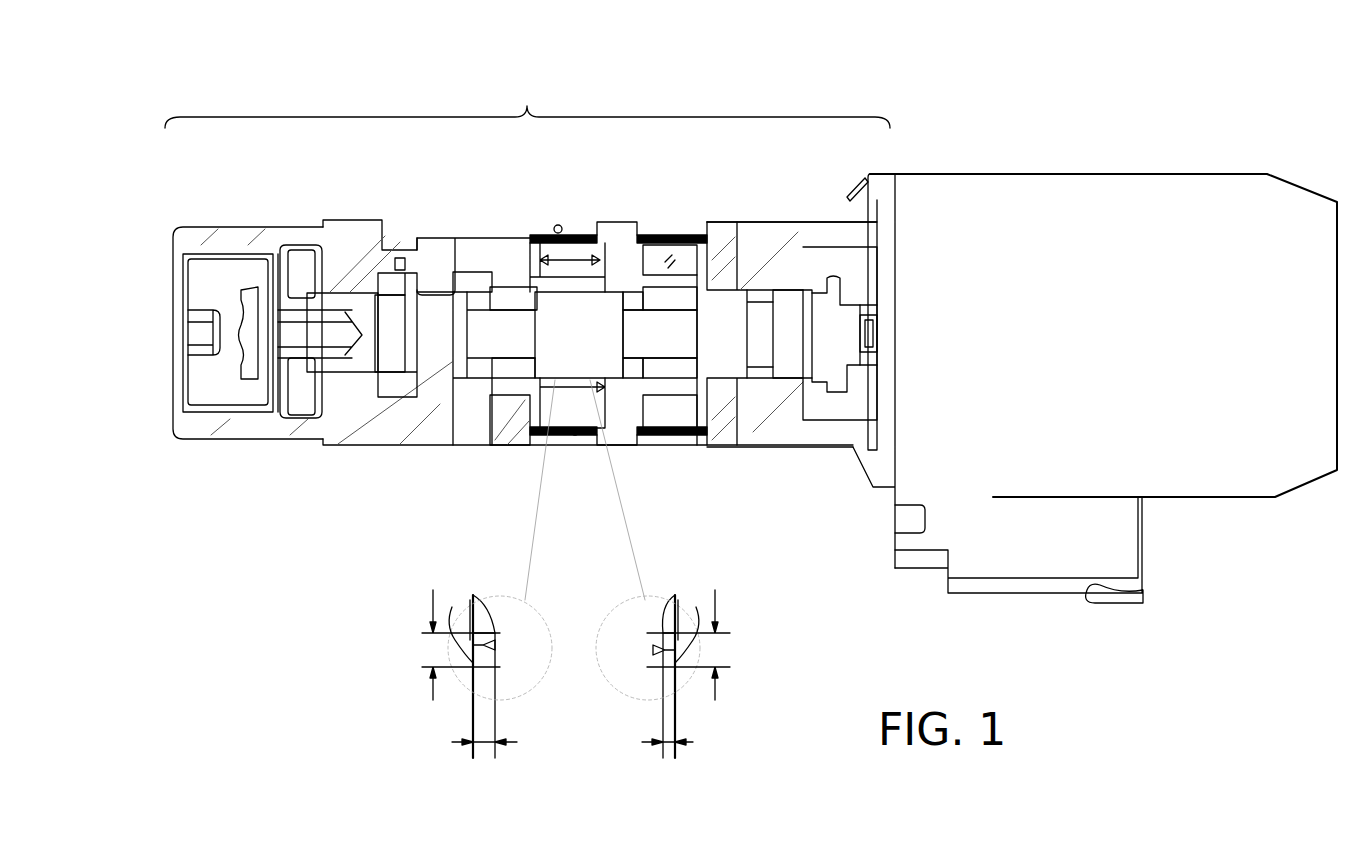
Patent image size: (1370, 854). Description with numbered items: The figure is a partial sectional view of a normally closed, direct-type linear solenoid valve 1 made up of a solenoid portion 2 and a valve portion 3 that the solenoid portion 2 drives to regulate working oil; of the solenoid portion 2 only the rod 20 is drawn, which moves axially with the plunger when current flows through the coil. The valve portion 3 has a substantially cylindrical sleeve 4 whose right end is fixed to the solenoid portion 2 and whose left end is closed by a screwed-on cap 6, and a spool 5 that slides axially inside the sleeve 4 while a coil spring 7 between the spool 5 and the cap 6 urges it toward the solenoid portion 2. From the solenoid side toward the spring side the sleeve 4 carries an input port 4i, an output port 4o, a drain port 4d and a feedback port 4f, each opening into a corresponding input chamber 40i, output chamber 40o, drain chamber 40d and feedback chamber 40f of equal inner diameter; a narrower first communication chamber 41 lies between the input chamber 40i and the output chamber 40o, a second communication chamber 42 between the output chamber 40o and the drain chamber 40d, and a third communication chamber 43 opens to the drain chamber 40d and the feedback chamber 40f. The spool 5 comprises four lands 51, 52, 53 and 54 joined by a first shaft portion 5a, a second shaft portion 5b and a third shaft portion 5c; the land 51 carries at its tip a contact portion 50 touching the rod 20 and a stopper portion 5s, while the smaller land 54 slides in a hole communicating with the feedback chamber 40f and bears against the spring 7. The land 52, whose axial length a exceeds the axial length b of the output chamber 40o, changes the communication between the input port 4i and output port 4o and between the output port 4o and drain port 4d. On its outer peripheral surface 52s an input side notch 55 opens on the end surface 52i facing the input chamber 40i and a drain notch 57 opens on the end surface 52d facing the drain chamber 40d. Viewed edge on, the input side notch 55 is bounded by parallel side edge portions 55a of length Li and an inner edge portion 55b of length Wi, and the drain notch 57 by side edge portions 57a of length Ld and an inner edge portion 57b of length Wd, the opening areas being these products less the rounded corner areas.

The linear solenoid valve 1 is at (931, 129).
The solenoid portion 2 is at (1105, 170).
The rod 20 is at (878, 333).
The valve portion 3 is at (527, 100).
The sleeve 4 is at (780, 417).
The drain port 4d is at (467, 420).
The feedback port 4f is at (383, 257).
The input port 4i is at (683, 330).
The output port 4o is at (548, 232).
The spool 5 is at (820, 383).
The first shaft portion 5a is at (733, 232).
The second shaft portion 5b is at (520, 330).
The third shaft portion 5c is at (347, 372).
The stopper portion 5s is at (850, 312).
The cap 6 is at (218, 280).
The spring 7 is at (256, 285).
The drain chamber 40d is at (453, 236).
The feedback chamber 40f is at (386, 388).
The input chamber 40i is at (688, 390).
The output chamber 40o is at (587, 275).
The first communication chamber 41 is at (637, 393).
The second communication chamber 42 is at (533, 370).
The third communication chamber 43 is at (410, 270).
The contact portion 50 is at (860, 280).
The land 51 is at (737, 405).
The land 52 is at (603, 305).
The outer peripheral surface 52s is at (602, 345).
The end surface 52d is at (468, 600).
The end surface 52i is at (680, 600).
The land 53 is at (438, 362).
The land 54 is at (266, 395).
The input side notch 55 is at (663, 663).
The side edge portion 55a is at (688, 622).
The inner edge portion 55b is at (660, 655).
The drain notch 57 is at (500, 620).
The side edge portion 57a is at (460, 622).
The inner edge portion 57b is at (487, 645).
The length of the land a is at (575, 436).
The length of the output chamber b is at (560, 232).
The length of the inner edge portion Wd is at (460, 652).
The length of the drain notch Ld is at (466, 742).
The length of the inner edge portion Wi is at (688, 652).
The length of the input side notch Li is at (680, 742).